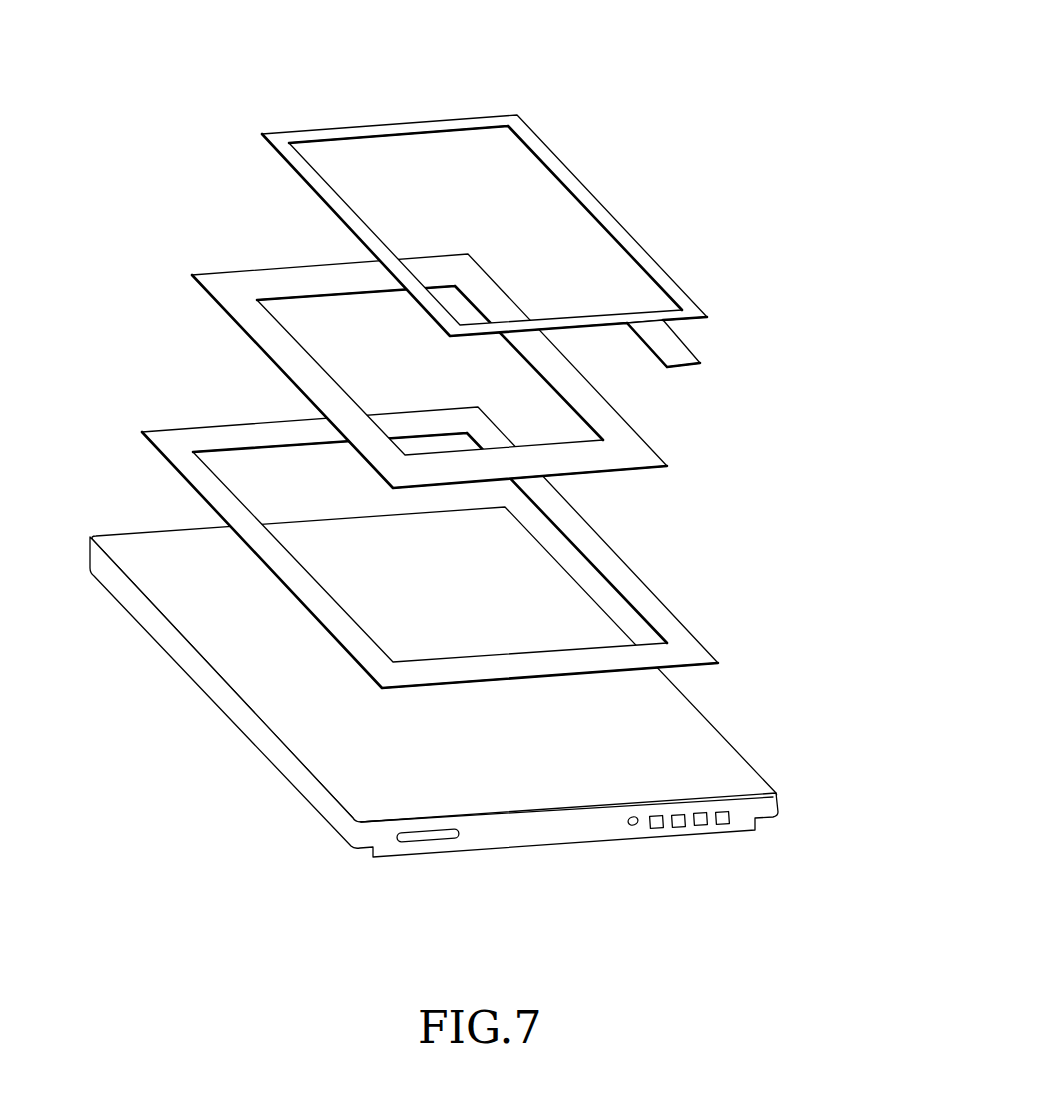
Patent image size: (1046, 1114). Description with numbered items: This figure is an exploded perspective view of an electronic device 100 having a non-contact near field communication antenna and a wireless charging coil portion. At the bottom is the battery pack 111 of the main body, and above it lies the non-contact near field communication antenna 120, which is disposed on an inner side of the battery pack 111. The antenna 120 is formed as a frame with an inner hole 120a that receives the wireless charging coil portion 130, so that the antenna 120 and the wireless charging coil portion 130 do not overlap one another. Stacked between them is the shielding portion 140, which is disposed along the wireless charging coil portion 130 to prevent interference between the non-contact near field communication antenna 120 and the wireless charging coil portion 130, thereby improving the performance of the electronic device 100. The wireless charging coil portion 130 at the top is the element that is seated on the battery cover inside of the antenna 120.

The electronic device 100 is at (692, 72).
The battery pack 111 is at (693, 742).
The non-contact near field communication antenna 120 is at (631, 588).
The inner hole 120a is at (257, 467).
The wireless charging coil portion 130 is at (642, 252).
The shielding portion 140 is at (632, 443).